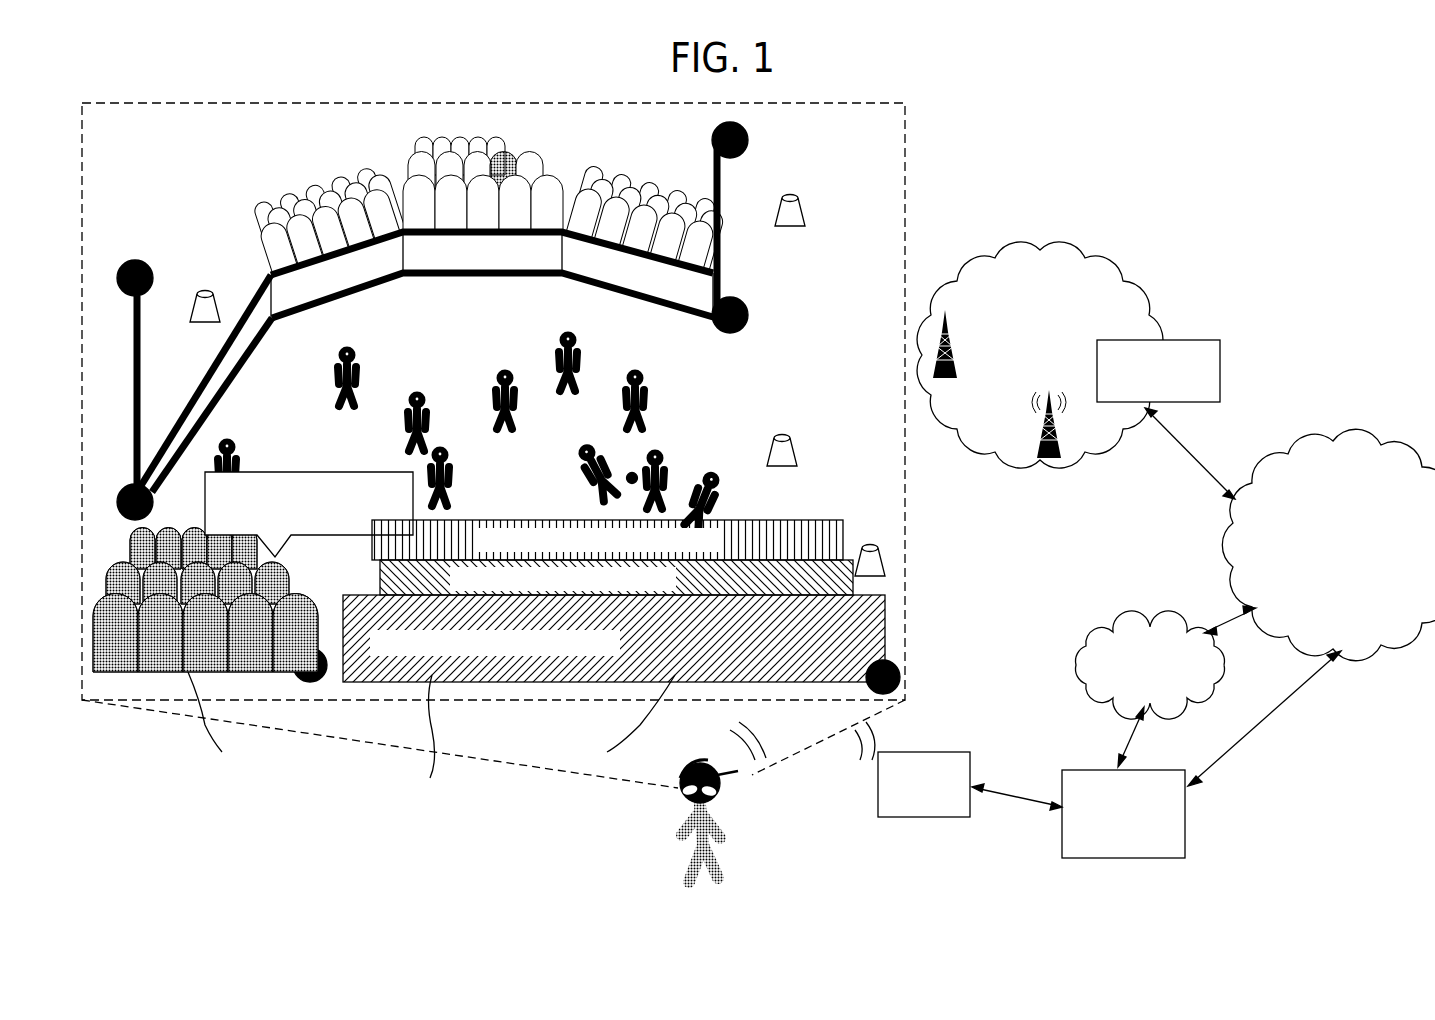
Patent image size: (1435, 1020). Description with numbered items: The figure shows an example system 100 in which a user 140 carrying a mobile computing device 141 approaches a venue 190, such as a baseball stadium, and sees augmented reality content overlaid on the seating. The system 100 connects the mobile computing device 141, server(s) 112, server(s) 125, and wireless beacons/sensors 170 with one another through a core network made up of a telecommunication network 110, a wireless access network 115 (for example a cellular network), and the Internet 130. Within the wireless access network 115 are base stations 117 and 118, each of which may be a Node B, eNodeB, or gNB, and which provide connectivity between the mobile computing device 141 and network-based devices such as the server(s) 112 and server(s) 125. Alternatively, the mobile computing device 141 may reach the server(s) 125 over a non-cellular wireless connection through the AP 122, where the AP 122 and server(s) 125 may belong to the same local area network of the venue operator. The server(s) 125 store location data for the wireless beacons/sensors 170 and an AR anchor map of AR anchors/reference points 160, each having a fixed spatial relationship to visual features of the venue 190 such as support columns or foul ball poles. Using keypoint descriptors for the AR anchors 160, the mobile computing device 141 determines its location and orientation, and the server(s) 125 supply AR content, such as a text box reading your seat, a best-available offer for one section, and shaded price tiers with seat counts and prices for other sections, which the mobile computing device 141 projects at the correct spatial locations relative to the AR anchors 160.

The system 100 is at (223, 85).
The venue 190 is at (174, 155).
The AR anchors/reference points 160 is at (152, 270).
The wireless beacons/sensors 170 is at (193, 325).
The user 140 is at (728, 868).
The mobile computing device 141 is at (740, 772).
The AP 122 is at (942, 798).
The server(s) 125 is at (1105, 826).
The Internet 130 is at (1132, 683).
The telecommunication network 110 is at (1323, 531).
The wireless access network 115 is at (1022, 342).
The base station 117 is at (945, 378).
The base station 118 is at (1050, 458).
The server(s) 112 is at (1176, 397).